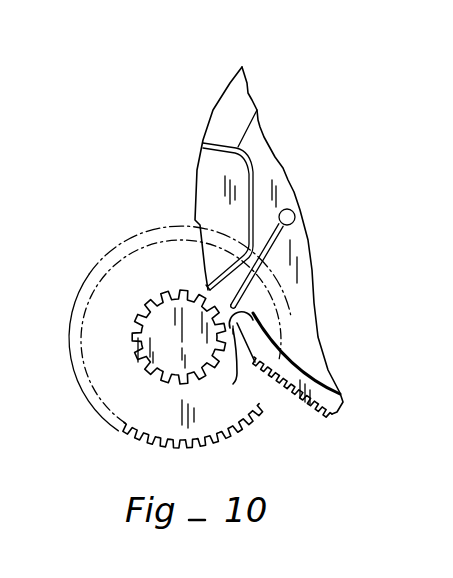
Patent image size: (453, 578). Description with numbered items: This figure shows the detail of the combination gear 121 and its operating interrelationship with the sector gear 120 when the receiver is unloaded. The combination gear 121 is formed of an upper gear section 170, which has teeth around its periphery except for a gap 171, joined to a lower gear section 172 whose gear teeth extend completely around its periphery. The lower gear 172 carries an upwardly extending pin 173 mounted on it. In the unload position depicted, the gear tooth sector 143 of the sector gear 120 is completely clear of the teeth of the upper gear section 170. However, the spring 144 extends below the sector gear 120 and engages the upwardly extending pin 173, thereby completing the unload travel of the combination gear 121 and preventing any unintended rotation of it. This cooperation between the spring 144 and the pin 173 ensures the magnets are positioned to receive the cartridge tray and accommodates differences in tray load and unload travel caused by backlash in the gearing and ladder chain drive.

The sector gear 120 is at (256, 147).
The combination gear 121 is at (146, 220).
The gear tooth sector 143 is at (301, 424).
The spring 144 is at (268, 258).
The upper gear section 170 is at (160, 328).
The gap 171 is at (205, 292).
The lower gear section 172 is at (103, 291).
The pin 173 is at (233, 384).